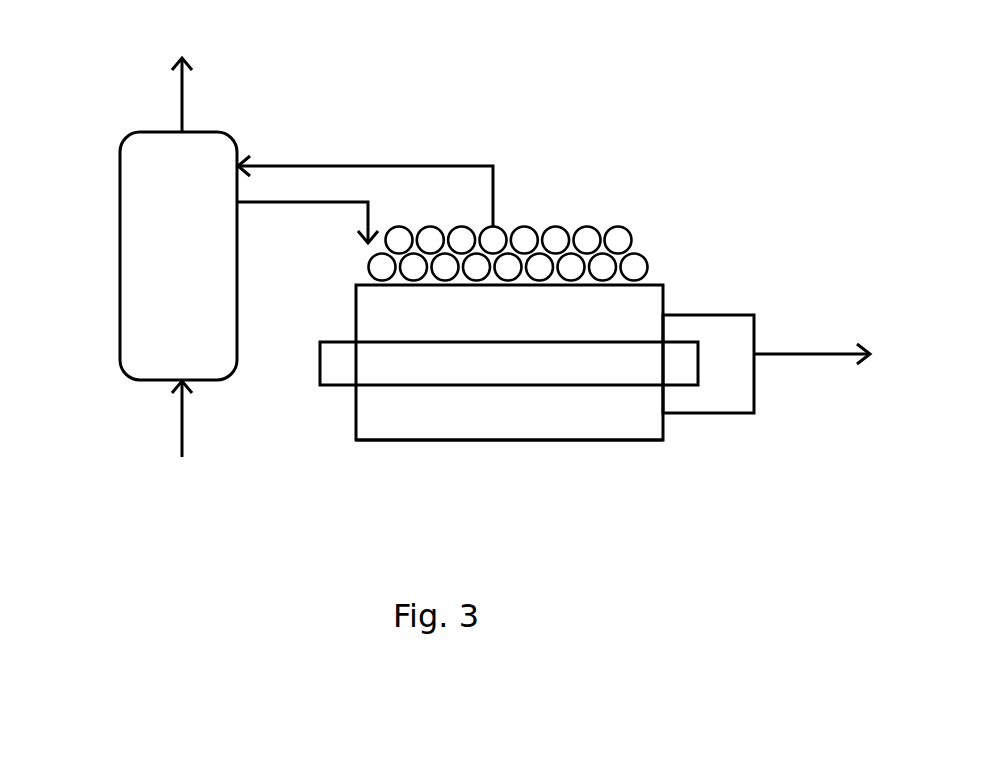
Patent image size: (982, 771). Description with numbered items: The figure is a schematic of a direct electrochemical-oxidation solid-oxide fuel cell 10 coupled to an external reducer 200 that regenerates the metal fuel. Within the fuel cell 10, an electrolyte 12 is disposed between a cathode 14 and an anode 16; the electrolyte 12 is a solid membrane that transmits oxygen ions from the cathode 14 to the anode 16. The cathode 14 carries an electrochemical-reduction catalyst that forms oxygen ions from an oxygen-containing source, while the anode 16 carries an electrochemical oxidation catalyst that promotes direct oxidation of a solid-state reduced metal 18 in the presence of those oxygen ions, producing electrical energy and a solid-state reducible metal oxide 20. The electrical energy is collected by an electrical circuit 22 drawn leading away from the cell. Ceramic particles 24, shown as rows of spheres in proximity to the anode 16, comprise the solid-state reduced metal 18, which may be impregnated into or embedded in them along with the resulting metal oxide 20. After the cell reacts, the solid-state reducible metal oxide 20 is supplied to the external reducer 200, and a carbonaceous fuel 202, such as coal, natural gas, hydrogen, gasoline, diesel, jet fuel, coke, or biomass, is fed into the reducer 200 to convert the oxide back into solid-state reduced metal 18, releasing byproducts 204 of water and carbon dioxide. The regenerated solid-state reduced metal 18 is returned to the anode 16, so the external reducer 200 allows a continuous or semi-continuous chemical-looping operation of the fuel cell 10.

The solid-oxide fuel cell 10 is at (678, 230).
The electrolyte 12 is at (342, 385).
The cathode 14 is at (663, 440).
The anode 16 is at (356, 318).
The solid-state reduced metal 18 is at (270, 202).
The solid-state reducible metal oxide 20 is at (353, 166).
The electrical circuit 22 is at (707, 315).
The ceramic particles 24 is at (533, 228).
The external reducer 200 is at (142, 383).
The carbonaceous fuel 202 is at (178, 435).
The byproducts 204 is at (183, 112).